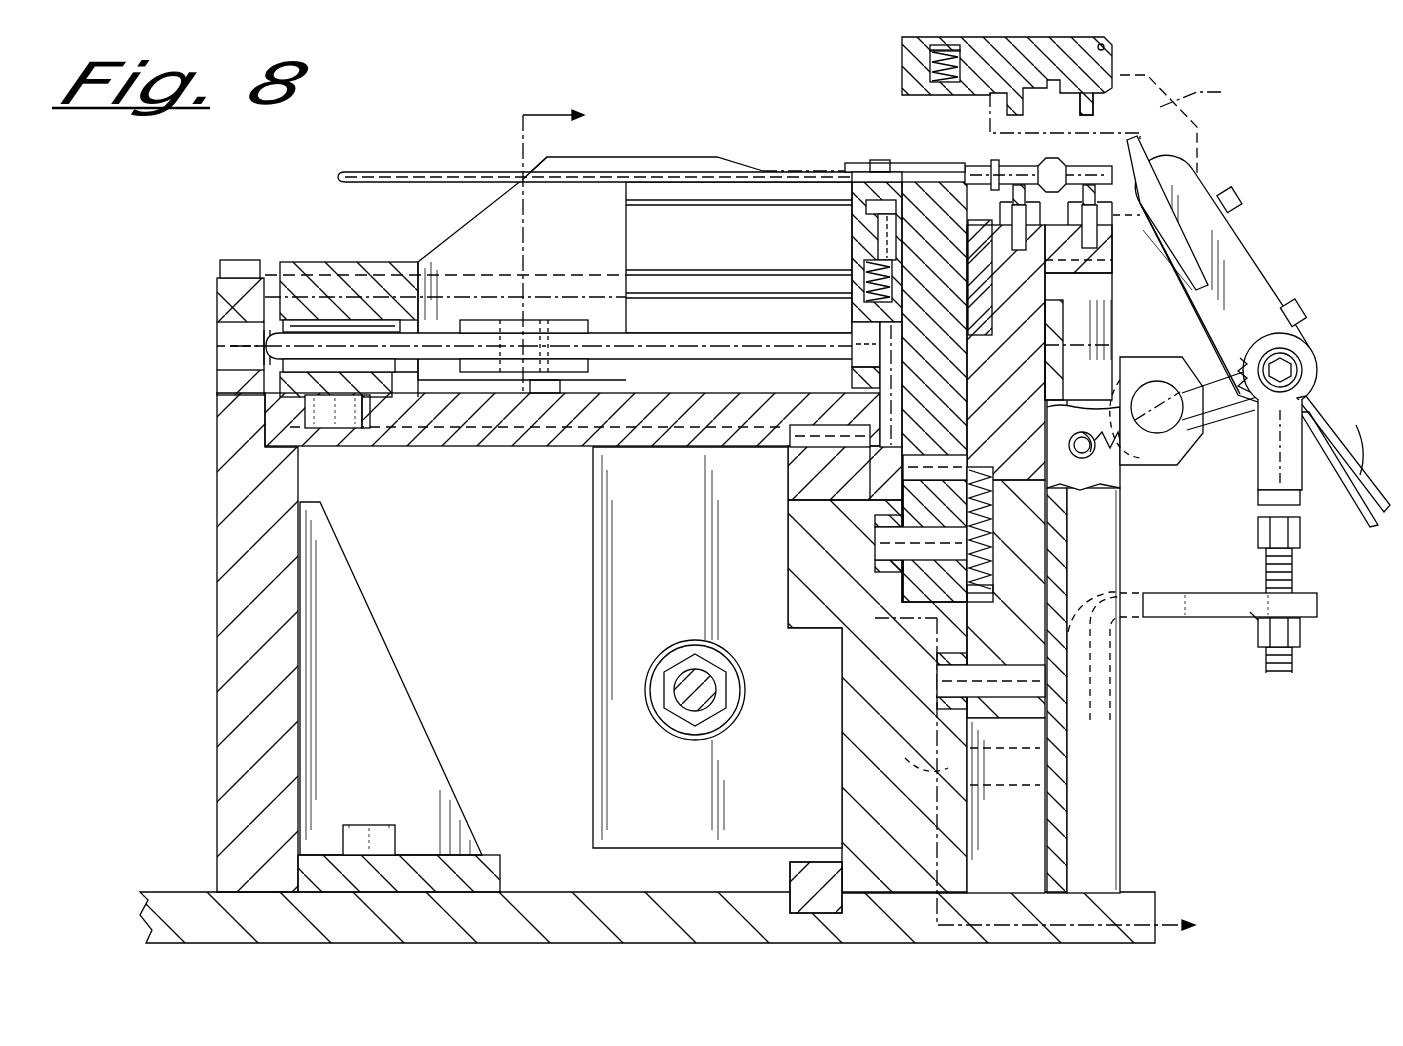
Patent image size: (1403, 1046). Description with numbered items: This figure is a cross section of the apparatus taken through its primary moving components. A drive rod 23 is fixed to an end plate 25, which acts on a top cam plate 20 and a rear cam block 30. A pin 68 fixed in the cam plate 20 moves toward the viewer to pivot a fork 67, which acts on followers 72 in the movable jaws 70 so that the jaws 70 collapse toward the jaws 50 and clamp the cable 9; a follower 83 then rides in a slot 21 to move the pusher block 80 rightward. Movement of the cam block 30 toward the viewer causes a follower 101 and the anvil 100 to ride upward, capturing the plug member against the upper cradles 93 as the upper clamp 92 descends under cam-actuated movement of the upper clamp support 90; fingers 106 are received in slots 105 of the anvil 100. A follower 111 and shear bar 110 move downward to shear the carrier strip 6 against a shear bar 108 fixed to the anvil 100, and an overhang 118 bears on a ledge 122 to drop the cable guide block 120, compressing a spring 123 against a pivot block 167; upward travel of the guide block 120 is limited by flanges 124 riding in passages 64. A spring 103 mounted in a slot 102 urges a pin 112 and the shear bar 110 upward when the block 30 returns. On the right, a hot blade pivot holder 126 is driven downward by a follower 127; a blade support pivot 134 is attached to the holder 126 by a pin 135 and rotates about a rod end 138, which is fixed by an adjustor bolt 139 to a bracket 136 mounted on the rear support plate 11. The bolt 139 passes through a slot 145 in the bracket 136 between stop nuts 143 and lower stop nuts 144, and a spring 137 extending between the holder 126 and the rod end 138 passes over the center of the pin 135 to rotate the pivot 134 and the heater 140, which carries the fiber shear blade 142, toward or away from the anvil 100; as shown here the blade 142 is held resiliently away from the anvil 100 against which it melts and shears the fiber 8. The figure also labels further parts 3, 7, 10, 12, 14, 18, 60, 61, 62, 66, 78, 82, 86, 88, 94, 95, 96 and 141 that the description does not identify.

The rod 3 is at (975, 170).
The carrier strip 6 is at (949, 168).
The rod 7 is at (400, 178).
The fiber 8 is at (897, 180).
The cable 9 is at (812, 170).
The gusset 10 is at (300, 635).
The rear support plate 11 is at (1100, 822).
The base 12 is at (178, 905).
The wall 14 is at (225, 438).
The block 18 is at (800, 882).
The top cam plate 20 is at (505, 455).
The slot 21 is at (370, 412).
The drive rod 23 is at (693, 692).
The end plate 25 is at (602, 575).
The rear cam block 30 is at (845, 700).
The jaws 50 is at (673, 157).
The housing 60 is at (637, 268).
The slot 61 is at (676, 198).
The slot 62 is at (710, 290).
The passages 64 is at (856, 288).
The shaft 66 is at (695, 345).
The fork 67 is at (890, 386).
The pin 68 is at (812, 445).
The movable jaws 70 is at (485, 322).
The followers 72 is at (535, 332).
The pin 78 is at (543, 400).
The pusher block 80 is at (340, 275).
The key 82 is at (364, 333).
The follower 83 is at (338, 412).
The bearing block 86 is at (228, 297).
The bearing 88 is at (232, 362).
The upper clamp support 90 is at (1190, 136).
The upper clamp 92 is at (1058, 50).
The upper cradles 93 is at (1088, 118).
The spring 94 is at (930, 72).
The spring seat 95 is at (925, 58).
The hole 96 is at (1115, 47).
The anvil 100 is at (1030, 400).
The follower 101 is at (936, 648).
The slot 102 is at (985, 520).
The spring 103 is at (985, 590).
The slots 105 is at (1020, 240).
The fingers 106 is at (1112, 197).
The shear bar 108 is at (975, 280).
The shear bar 110 is at (958, 425).
The follower 111 is at (880, 565).
The pin 112 is at (975, 462).
The overhang 118 is at (880, 175).
The cable guide block 120 is at (866, 233).
The ledge 122 is at (880, 210).
The spring 123 is at (860, 272).
The flanges 124 is at (896, 236).
The hot blade pivot holder 126 is at (1130, 462).
The follower 127 is at (925, 762).
The blade support pivot 134 is at (1220, 425).
The pin 135 is at (1162, 395).
The bracket 136 is at (1204, 600).
The spring 137 is at (1245, 372).
The rod end 138 is at (1312, 372).
The adjustor bolt 139 is at (1292, 580).
The heater 140 is at (1255, 268).
The leaf spring 141 is at (1343, 458).
The fiber shear blade 142 is at (1152, 165).
The stop nuts 143 is at (1298, 534).
The lower stop nuts 144 is at (1304, 645).
The slot 145 is at (1252, 622).
The pivot block 167 is at (854, 316).